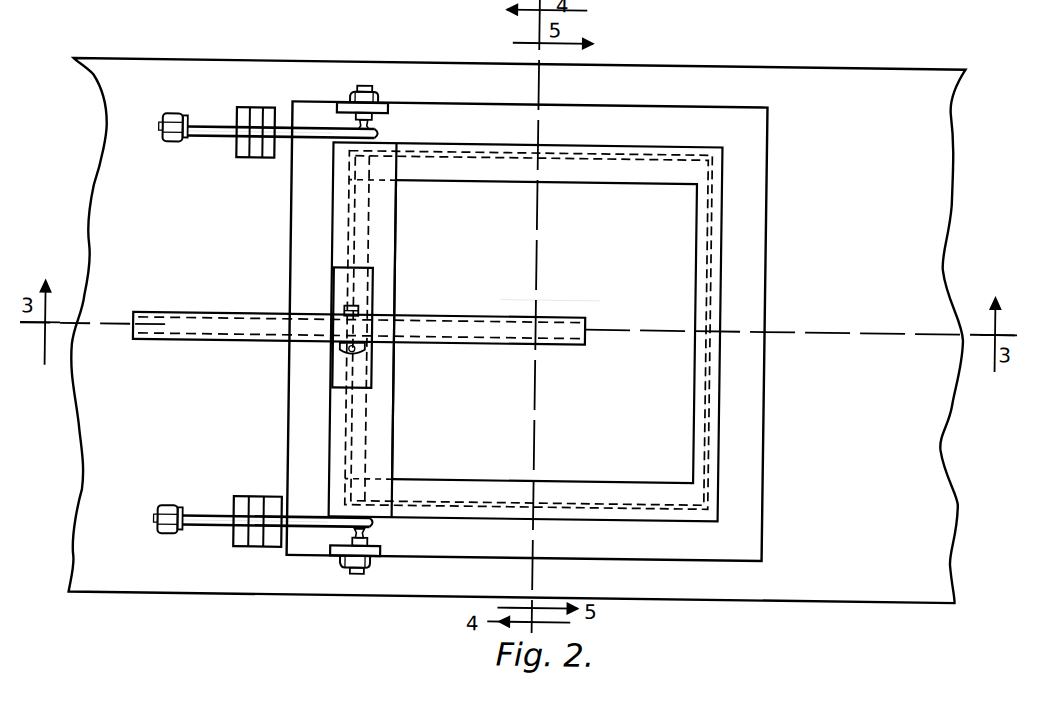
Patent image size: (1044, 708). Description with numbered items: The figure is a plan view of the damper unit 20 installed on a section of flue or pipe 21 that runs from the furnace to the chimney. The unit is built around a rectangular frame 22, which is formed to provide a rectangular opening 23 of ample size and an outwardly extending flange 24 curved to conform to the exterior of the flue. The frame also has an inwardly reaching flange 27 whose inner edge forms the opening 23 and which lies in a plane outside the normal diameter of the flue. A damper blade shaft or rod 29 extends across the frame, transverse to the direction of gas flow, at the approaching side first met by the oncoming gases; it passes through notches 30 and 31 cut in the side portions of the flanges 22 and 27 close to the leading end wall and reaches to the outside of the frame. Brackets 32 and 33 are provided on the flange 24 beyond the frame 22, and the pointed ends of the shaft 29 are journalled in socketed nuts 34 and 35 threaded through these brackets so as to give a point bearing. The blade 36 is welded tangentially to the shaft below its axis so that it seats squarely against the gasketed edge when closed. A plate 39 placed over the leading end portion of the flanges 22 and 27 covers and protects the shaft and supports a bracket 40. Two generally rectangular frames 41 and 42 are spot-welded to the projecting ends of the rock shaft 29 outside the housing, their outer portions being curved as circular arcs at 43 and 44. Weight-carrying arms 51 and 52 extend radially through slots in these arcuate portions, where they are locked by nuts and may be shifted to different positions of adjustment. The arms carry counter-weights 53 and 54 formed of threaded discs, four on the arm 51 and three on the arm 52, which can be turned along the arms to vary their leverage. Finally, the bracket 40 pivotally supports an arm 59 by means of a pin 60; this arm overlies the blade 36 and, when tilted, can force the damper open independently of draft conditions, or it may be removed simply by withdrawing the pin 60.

The damper unit 20 is at (701, 101).
The flue or pipe 21 is at (517, 330).
The frame 22 is at (721, 224).
The rectangular opening 23 is at (705, 262).
The outwardly extending flange 24 is at (744, 410).
The inwardly reaching flange 27 is at (702, 439).
The damper blade shaft or rod 29 is at (368, 210).
The notch 30 is at (370, 152).
The notch 31 is at (367, 507).
The bracket 32 is at (382, 106).
The bracket 33 is at (336, 556).
The socketed nut 34 is at (364, 92).
The socketed nut 35 is at (360, 575).
The blade 36 is at (552, 282).
The plate 39 is at (382, 257).
The bracket 40 is at (405, 327).
The frame 41 is at (215, 533).
The frame 42 is at (197, 130).
The curved portion 43 is at (173, 538).
The curved portion 44 is at (173, 153).
The weight-carrying arm 51 is at (200, 515).
The weight-carrying arm 52 is at (205, 144).
The counter-weight 53 is at (255, 546).
The counter-weight 54 is at (254, 114).
The arm 59 is at (452, 334).
The pin 60 is at (353, 359).